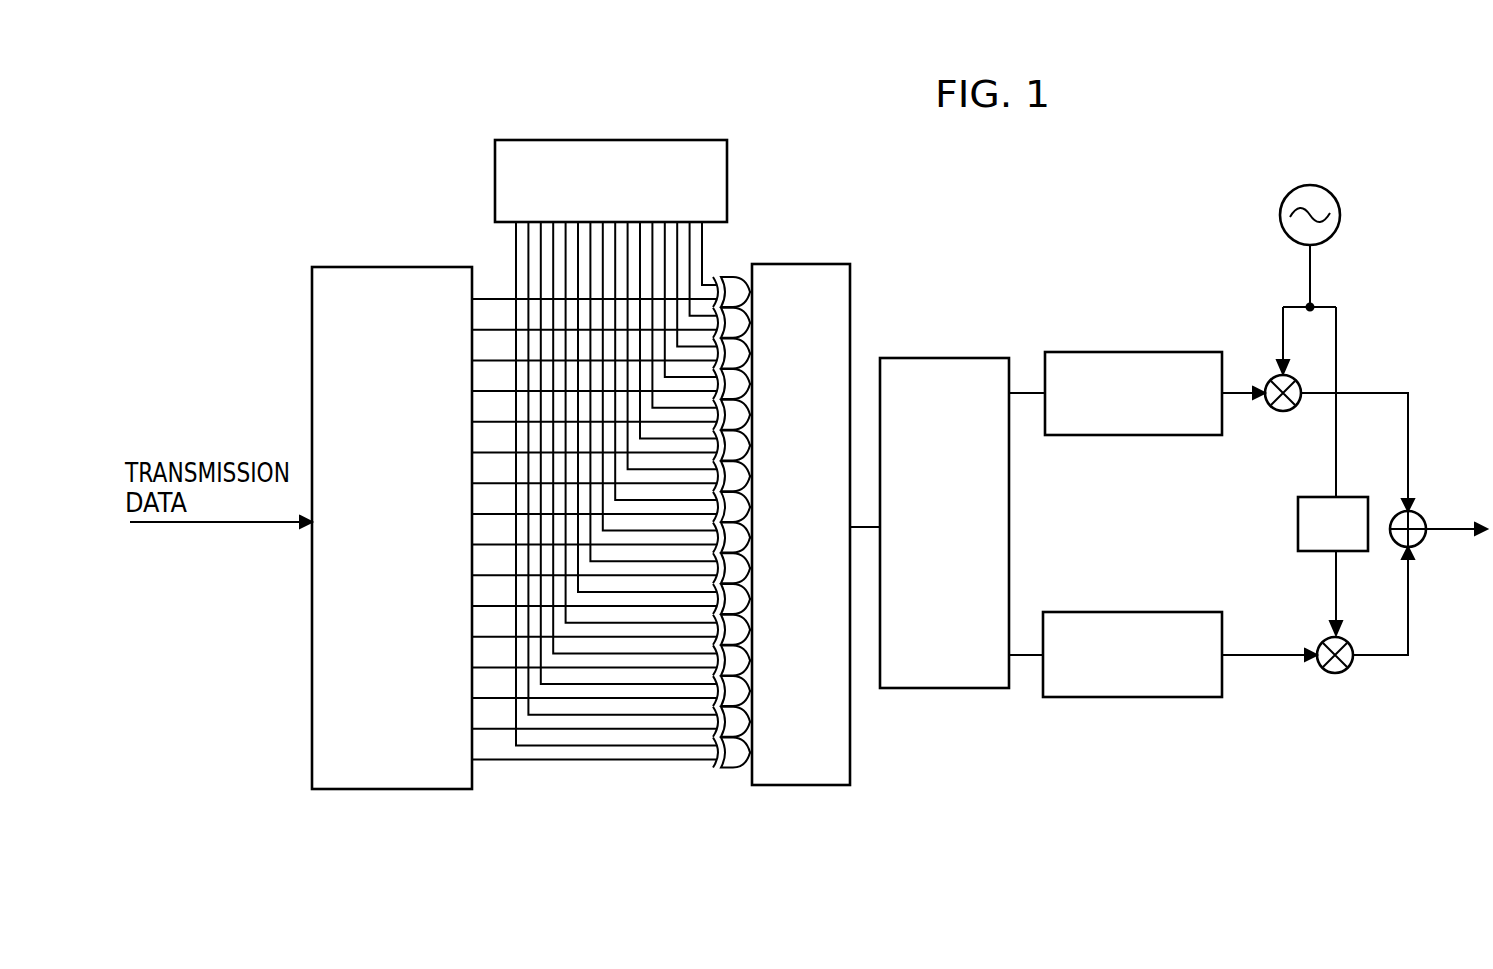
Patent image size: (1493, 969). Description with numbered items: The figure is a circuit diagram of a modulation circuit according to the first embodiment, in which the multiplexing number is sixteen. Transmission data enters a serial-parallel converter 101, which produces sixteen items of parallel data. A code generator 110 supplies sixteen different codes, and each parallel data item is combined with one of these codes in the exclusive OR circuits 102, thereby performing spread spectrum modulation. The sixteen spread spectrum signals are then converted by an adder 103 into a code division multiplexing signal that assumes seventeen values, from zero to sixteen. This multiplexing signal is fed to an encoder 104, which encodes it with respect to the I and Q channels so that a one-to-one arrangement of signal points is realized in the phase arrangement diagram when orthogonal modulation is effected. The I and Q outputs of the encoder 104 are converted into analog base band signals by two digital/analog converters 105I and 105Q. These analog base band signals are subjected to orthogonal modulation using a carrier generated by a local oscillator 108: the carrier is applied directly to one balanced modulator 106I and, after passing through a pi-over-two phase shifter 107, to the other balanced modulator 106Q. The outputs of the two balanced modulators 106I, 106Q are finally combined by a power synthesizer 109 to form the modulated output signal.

The serial-parallel converter 101 is at (378, 266).
The code generator 110 is at (495, 160).
The exclusive OR circuits 102 is at (730, 278).
The adder 103 is at (829, 263).
The encoder 104 is at (941, 357).
The digital/analog converter 105I is at (1108, 351).
The digital/analog converter 105Q is at (1108, 612).
The balanced modulator 106I is at (1279, 412).
The balanced modulator 106Q is at (1333, 675).
The π/2 phase shifter 107 is at (1296, 522).
The local oscillator 108 is at (1280, 218).
The power synthesizer 109 is at (1420, 540).